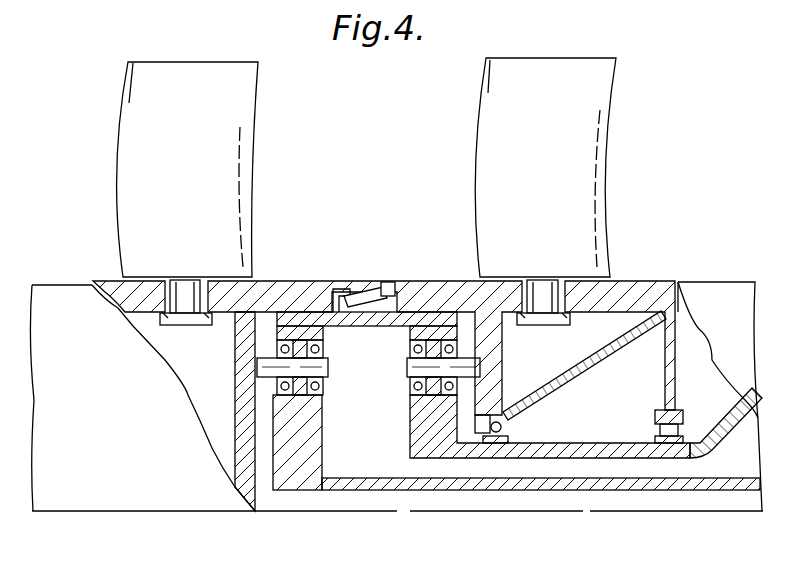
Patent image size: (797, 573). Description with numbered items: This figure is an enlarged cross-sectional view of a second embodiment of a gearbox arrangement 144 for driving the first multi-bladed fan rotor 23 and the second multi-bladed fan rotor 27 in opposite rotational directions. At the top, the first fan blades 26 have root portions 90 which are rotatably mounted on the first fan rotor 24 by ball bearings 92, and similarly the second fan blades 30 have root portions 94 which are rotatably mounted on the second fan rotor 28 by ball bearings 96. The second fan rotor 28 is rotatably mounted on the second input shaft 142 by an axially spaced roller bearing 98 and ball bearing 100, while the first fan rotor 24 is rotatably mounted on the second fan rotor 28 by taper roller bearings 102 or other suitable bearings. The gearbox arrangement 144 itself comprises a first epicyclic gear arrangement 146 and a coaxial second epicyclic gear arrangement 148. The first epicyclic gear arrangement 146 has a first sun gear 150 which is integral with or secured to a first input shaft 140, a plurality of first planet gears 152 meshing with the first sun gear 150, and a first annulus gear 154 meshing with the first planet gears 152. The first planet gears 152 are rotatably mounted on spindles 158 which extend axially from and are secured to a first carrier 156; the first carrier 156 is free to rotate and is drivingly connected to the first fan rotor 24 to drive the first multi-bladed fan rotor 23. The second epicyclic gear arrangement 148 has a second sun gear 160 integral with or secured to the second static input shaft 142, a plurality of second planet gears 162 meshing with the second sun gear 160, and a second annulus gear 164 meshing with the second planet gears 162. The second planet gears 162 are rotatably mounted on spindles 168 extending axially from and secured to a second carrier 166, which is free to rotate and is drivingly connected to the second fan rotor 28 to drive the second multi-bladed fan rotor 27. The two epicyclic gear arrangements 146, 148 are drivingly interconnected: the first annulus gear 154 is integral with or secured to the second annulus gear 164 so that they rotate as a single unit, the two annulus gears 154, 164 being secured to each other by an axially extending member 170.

The first multi-bladed fan rotor 23 is at (114, 160).
The first fan blades 26 is at (140, 95).
The first fan rotor 24 is at (118, 283).
The second multi-bladed fan rotor 27 is at (472, 156).
The second fan blades 30 is at (500, 99).
The second fan rotor 28 is at (472, 285).
The root portions 90 is at (182, 307).
The ball bearings 92 is at (163, 315).
The root portions 94 is at (550, 278).
The ball bearings 96 is at (572, 317).
The roller bearing 98 is at (672, 432).
The ball bearing 100 is at (503, 423).
The taper roller bearings 102 is at (377, 295).
The axially extending member 170 is at (323, 300).
The first input shaft 140 is at (720, 483).
The second input shaft 142 is at (688, 455).
The gearbox arrangement 144 is at (195, 424).
The first epicyclic gear arrangement 146 is at (332, 460).
The second epicyclic gear arrangement 148 is at (404, 428).
The first sun gear 150 is at (292, 438).
The first planet gears 152 is at (296, 335).
The first annulus gear 154 is at (290, 333).
The first carrier 156 is at (242, 468).
The spindles 158 is at (255, 368).
The second sun gear 160 is at (438, 427).
The second planet gears 162 is at (421, 322).
The second annulus gear 164 is at (433, 338).
The second carrier 166 is at (488, 347).
The spindles 168 is at (453, 362).